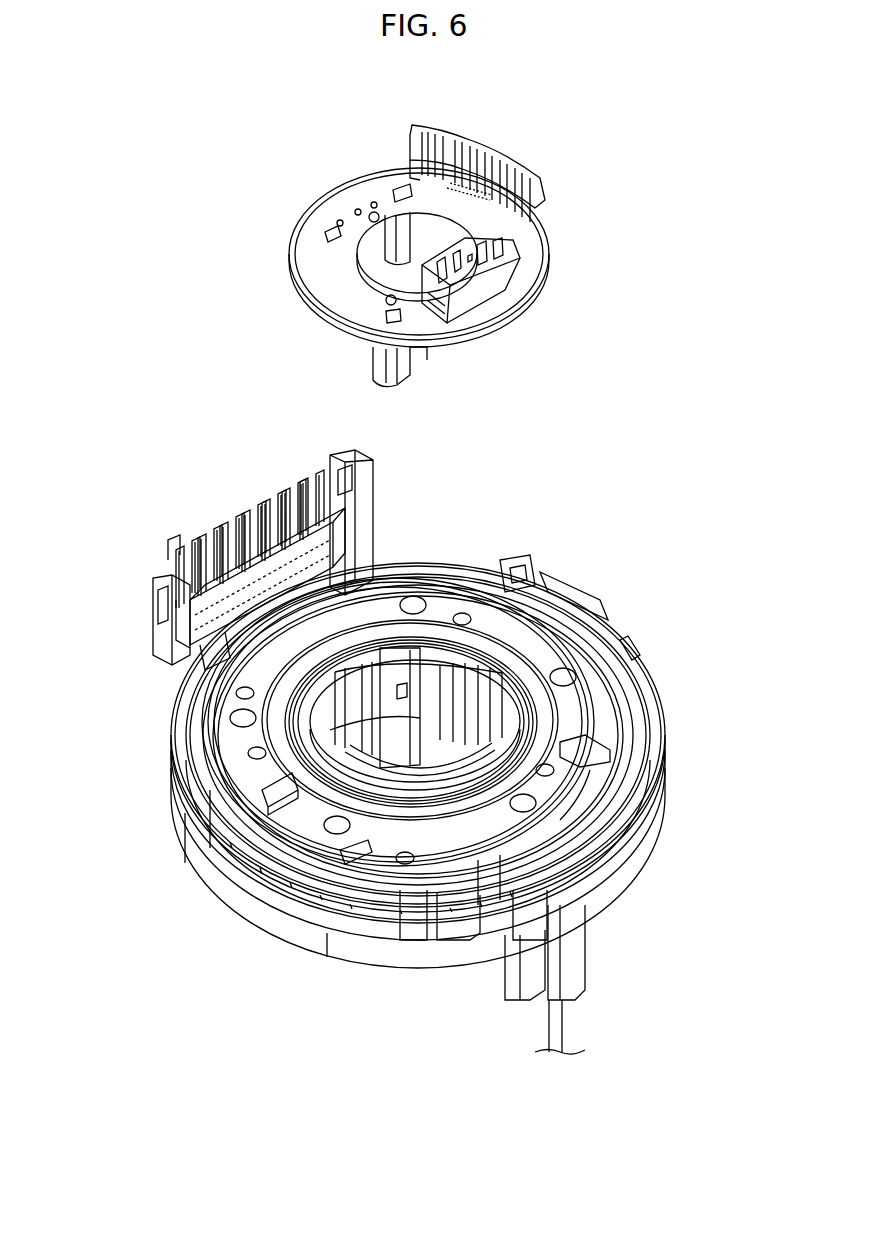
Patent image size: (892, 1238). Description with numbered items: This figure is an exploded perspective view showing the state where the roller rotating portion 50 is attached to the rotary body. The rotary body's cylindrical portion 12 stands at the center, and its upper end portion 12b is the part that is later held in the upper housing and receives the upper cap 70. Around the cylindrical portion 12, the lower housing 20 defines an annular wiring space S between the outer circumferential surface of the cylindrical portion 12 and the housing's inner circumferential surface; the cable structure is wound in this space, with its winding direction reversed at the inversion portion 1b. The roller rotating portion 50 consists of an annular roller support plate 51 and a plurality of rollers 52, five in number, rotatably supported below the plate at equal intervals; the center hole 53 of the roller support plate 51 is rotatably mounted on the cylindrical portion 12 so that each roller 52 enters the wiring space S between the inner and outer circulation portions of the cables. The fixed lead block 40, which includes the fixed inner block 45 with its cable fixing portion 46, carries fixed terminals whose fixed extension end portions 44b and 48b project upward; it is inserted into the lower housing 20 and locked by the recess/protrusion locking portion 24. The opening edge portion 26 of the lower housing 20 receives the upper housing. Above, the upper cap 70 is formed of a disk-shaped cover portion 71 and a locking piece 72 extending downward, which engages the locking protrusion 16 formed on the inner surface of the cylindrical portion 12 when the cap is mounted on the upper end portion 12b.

The upper cap 70 is at (436, 279).
The cover portion 71 is at (315, 266).
The locking piece 72 is at (405, 262).
The fixed lead block 40 is at (256, 540).
The fixed extension end portion 44b is at (235, 528).
The fixed extension end portion 48b is at (280, 517).
The cable fixing portion 46 is at (170, 553).
The fixed inner block 45 is at (165, 585).
The recess/protrusion locking portion 24 is at (372, 500).
The opening edge portion 26 is at (578, 585).
The lower housing 20 is at (625, 870).
The roller rotating portion 50 is at (300, 840).
The roller support plate 51 is at (372, 895).
The roller 52 is at (186, 818).
The center hole 53 is at (540, 722).
The inversion portion 1b is at (618, 706).
The wiring space S is at (600, 797).
The cylindrical portion 12 is at (411, 736).
The upper end portion 12b is at (405, 778).
The locking protrusion 16 is at (487, 690).